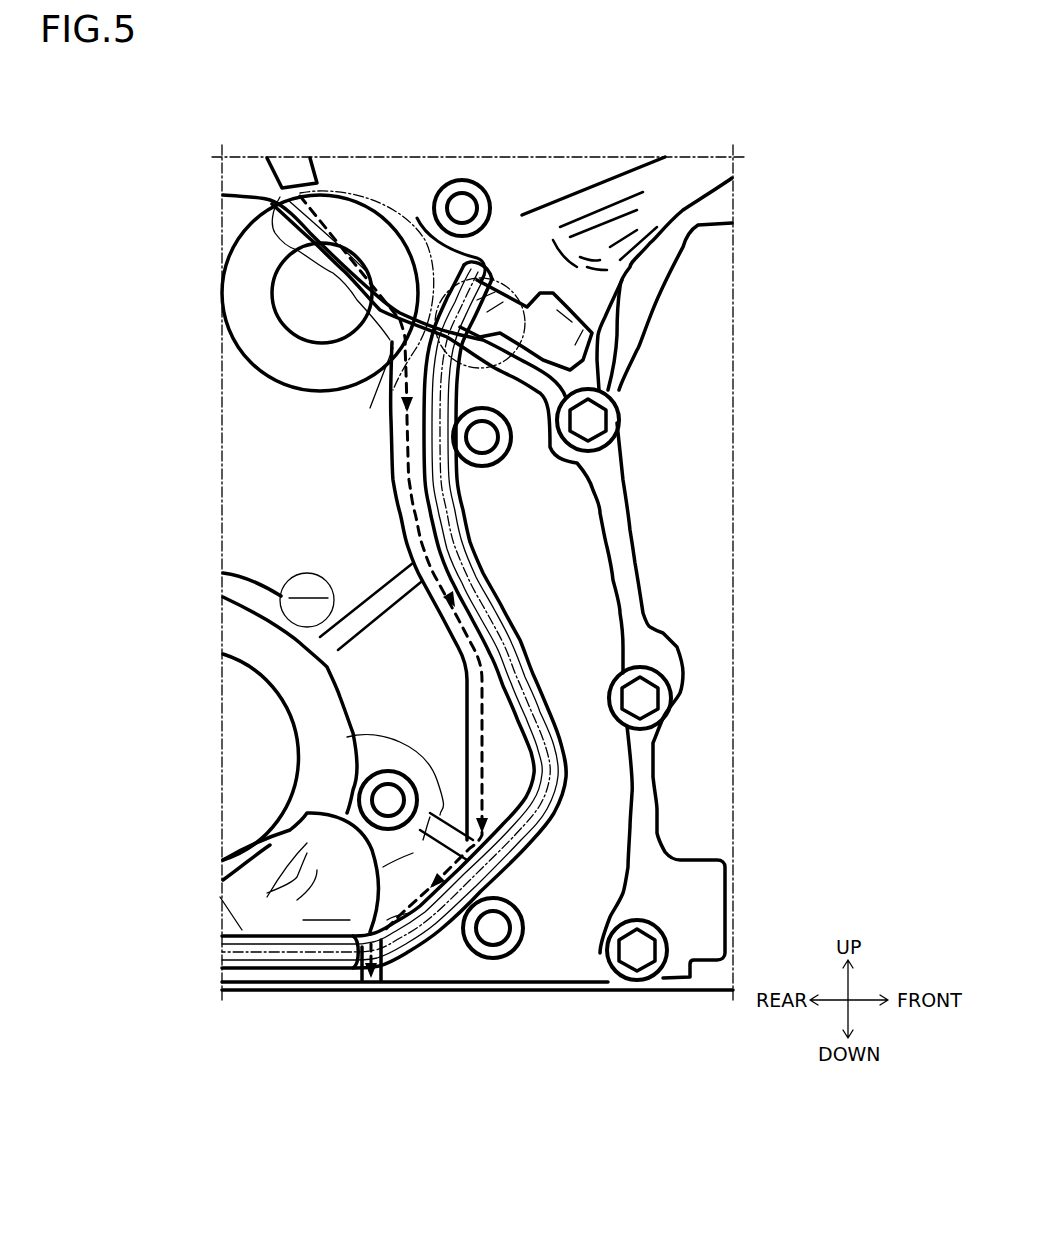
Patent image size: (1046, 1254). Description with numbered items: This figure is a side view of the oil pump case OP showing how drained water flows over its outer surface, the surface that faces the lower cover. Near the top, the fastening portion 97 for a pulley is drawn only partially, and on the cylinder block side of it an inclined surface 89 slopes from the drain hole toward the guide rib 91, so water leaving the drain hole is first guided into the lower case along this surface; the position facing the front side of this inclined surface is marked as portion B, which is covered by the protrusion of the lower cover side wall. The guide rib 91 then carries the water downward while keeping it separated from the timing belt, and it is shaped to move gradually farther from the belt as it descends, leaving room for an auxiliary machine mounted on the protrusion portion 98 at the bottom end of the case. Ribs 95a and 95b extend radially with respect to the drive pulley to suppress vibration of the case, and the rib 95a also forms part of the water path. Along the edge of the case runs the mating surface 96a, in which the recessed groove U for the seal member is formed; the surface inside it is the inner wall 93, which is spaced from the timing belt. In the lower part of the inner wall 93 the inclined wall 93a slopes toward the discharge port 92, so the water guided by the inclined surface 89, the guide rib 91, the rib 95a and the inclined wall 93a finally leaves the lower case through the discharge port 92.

The inclined surface 89 is at (403, 295).
The portion B is at (497, 272).
The fastening portion 97 is at (268, 323).
The guide rib 91 is at (388, 443).
The mating surface 96a is at (462, 527).
The oil pump case OP is at (637, 558).
The recessed groove U is at (487, 612).
The inner wall 93 is at (508, 724).
The rib 95b is at (337, 681).
The rib 95a is at (362, 742).
The inclined wall 93a is at (556, 805).
The protrusion portion 98 is at (318, 885).
The discharge port 92 is at (373, 983).